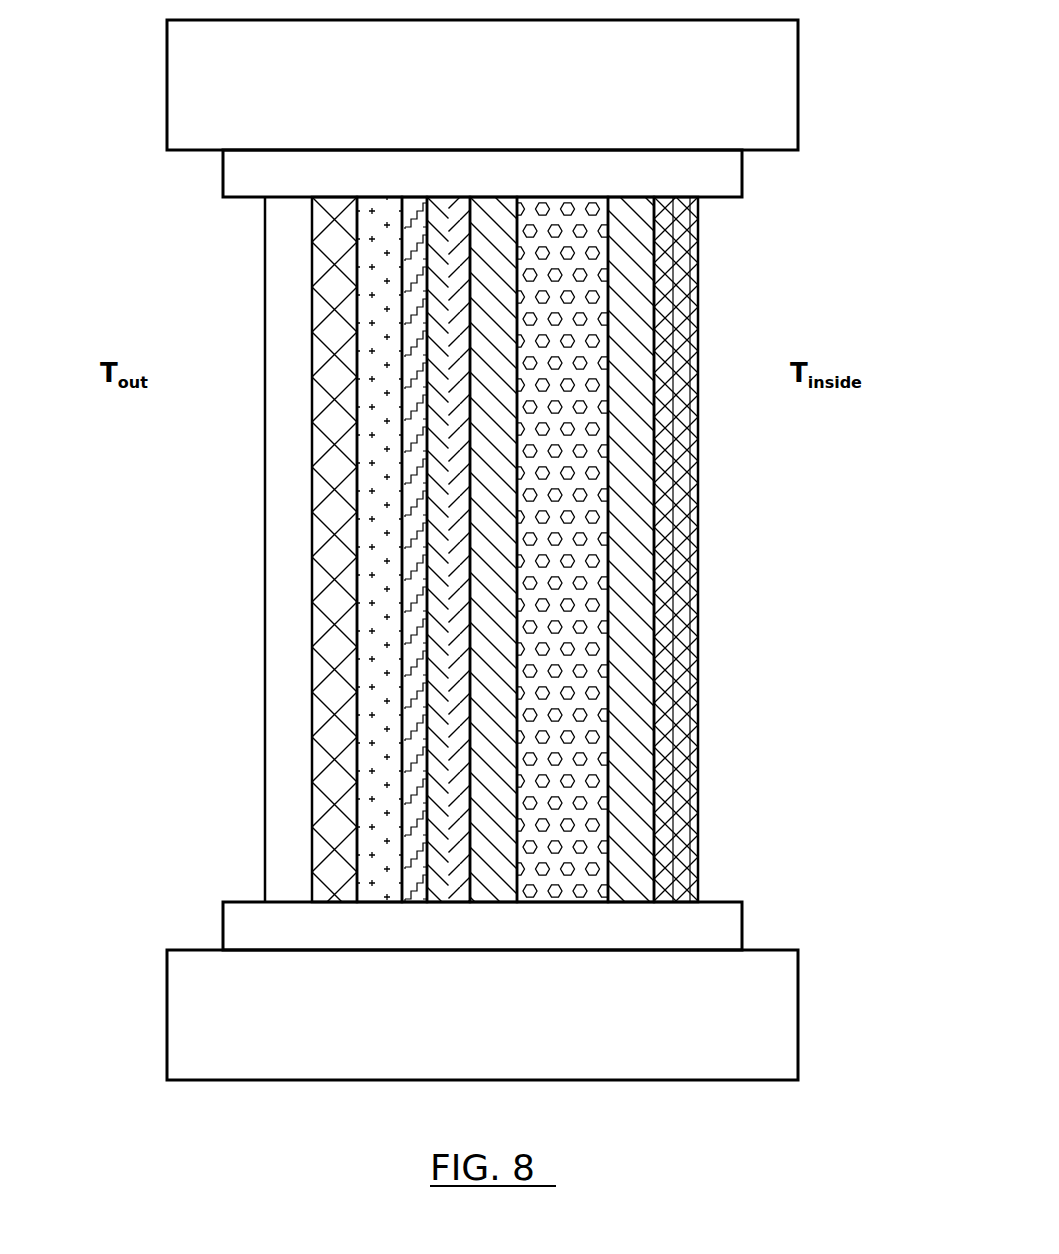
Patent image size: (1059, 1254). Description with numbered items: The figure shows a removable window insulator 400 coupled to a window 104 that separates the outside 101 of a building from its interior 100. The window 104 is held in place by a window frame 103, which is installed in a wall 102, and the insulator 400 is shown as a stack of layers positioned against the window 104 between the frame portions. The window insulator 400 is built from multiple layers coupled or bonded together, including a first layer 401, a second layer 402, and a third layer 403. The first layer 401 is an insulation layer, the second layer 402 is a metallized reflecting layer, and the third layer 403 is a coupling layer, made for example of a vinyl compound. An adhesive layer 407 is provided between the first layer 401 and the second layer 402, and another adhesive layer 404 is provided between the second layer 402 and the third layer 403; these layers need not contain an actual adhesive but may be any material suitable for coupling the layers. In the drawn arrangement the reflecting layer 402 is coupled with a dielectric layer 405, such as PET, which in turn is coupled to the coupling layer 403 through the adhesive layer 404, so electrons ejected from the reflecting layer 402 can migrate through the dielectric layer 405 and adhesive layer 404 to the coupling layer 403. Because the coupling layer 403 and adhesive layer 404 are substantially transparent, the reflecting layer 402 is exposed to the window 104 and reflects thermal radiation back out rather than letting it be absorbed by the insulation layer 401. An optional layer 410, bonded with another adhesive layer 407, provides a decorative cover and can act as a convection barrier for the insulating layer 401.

The interior 100 is at (878, 618).
The outside 101 is at (108, 618).
The wall 102 is at (775, 75).
The window frame 103 is at (718, 168).
The window 104 is at (278, 270).
The window insulator 400 is at (408, 544).
The first layer 401 is at (560, 705).
The second layer 402 is at (435, 712).
The third layer 403 is at (325, 432).
The adhesive layer 404 is at (370, 503).
The dielectric layer 405 is at (410, 615).
The adhesive layer 407 is at (498, 593).
The optional layer 410 is at (680, 472).